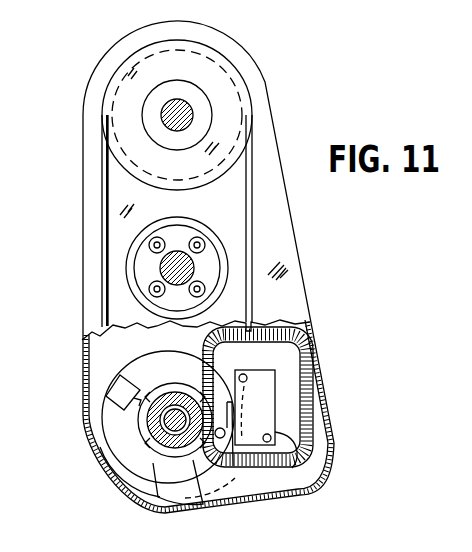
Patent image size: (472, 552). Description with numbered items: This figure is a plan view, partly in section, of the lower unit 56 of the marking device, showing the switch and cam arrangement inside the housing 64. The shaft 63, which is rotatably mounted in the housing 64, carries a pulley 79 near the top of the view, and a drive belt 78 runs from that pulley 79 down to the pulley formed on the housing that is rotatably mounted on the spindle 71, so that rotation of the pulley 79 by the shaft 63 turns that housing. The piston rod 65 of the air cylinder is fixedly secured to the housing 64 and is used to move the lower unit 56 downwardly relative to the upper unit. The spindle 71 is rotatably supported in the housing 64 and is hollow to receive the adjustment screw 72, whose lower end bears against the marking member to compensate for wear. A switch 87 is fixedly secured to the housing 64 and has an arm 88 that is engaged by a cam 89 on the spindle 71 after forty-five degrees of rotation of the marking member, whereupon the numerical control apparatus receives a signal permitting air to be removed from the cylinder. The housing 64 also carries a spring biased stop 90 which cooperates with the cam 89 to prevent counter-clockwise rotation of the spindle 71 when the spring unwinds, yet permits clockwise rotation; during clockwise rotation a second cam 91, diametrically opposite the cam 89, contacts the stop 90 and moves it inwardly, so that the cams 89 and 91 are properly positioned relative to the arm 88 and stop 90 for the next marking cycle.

The lower unit 56 is at (338, 352).
The shaft 63 is at (161, 117).
The housing 64 is at (331, 409).
The piston rod 65 is at (178, 251).
The spindle 71 is at (143, 504).
The adjustment screw 72 is at (165, 435).
The drive belt 78 is at (255, 153).
The pulley 79 is at (129, 172).
The switch 87 is at (292, 470).
The arm 88 is at (222, 439).
The cam 89 is at (192, 386).
The spring biased stop 90 is at (128, 409).
The cam 91 is at (200, 507).